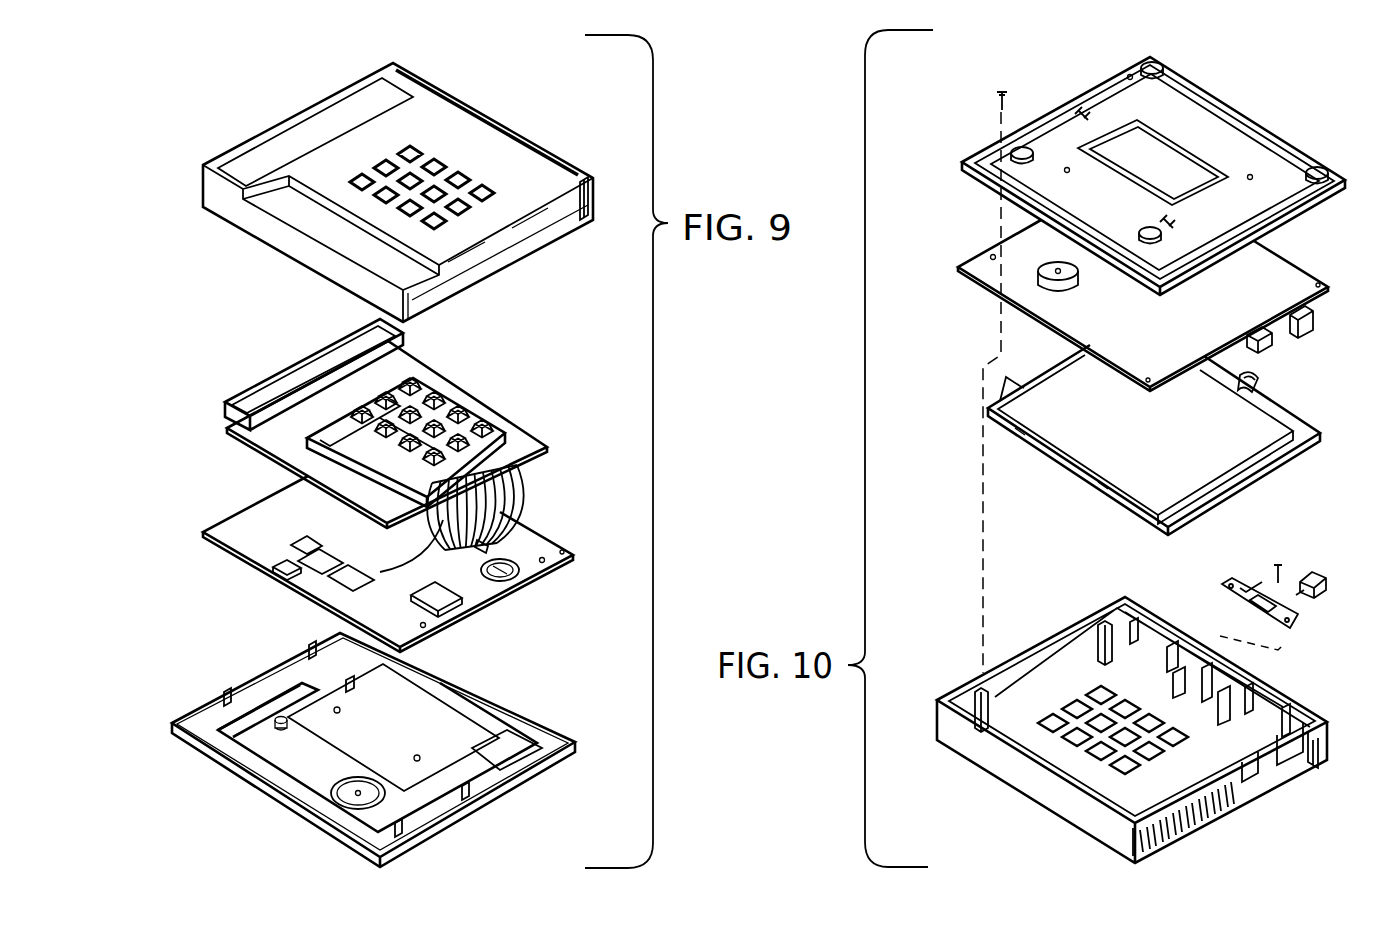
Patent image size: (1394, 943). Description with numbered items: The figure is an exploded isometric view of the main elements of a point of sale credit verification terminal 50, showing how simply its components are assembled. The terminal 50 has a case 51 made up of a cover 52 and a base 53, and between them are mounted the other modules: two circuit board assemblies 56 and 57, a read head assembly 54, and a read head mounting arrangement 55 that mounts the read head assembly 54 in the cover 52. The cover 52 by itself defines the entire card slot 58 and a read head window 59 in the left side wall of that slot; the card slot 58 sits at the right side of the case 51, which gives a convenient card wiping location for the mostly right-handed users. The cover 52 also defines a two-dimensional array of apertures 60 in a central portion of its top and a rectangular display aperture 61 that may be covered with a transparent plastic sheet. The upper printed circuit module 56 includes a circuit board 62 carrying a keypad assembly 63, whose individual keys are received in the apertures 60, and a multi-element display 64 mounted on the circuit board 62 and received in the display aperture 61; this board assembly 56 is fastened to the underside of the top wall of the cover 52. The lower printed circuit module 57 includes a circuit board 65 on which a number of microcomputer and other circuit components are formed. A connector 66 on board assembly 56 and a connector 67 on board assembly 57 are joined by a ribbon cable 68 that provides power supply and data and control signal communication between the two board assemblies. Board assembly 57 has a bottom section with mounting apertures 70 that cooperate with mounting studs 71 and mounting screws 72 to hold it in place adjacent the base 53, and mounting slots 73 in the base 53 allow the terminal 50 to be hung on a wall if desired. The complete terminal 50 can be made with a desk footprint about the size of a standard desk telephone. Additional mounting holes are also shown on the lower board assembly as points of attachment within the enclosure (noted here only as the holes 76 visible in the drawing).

In FIG. 9, the terminal 50 is at (602, 340).
In FIG. 10, the terminal 50 is at (1329, 516).
In FIG. 9, the case 51 is at (407, 192).
In FIG. 10, the case 51 is at (1153, 176).
In FIG. 9, the cover 52 is at (487, 273).
In FIG. 9, the base 53 is at (480, 803).
In FIG. 10, the base 53 is at (1162, 729).
In FIG. 10, the read head assembly 54 is at (1318, 596).
In FIG. 10, the read head mounting arrangement 55 is at (1290, 634).
In FIG. 9, the circuit board assembly 56 is at (397, 456).
In FIG. 9, the circuit board assembly 57 is at (401, 564).
In FIG. 9, the card slot 58 is at (573, 178).
In FIG. 10, the card slot 58 is at (1323, 753).
In FIG. 10, the read head window 59 is at (1245, 676).
In FIG. 9, the apertures 60 is at (445, 164).
In FIG. 9, the display aperture 61 is at (340, 100).
In FIG. 9, the circuit board 62 is at (260, 443).
In FIG. 9, the keypad assembly 63 is at (437, 397).
In FIG. 9, the multi-element display 64 is at (403, 337).
In FIG. 9, the circuit board 65 is at (247, 550).
In FIG. 9, the connector 66 is at (395, 486).
In FIG. 9, the connector 67 is at (298, 550).
In FIG. 9, the ribbon cable 68 is at (520, 498).
In FIG. 10, the mounting apertures 70 is at (992, 254).
In FIG. 10, the mounting studs 71 is at (1095, 635).
In FIG. 10, the mounting screws 72 is at (1005, 108).
In FIG. 10, the mounting slots 73 is at (1082, 111).
In FIG. 9, the mounting holes 76 is at (544, 562).